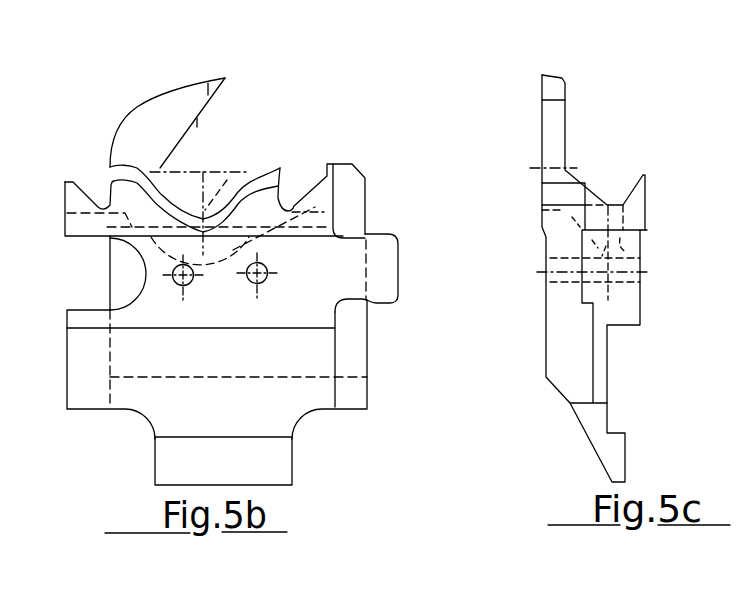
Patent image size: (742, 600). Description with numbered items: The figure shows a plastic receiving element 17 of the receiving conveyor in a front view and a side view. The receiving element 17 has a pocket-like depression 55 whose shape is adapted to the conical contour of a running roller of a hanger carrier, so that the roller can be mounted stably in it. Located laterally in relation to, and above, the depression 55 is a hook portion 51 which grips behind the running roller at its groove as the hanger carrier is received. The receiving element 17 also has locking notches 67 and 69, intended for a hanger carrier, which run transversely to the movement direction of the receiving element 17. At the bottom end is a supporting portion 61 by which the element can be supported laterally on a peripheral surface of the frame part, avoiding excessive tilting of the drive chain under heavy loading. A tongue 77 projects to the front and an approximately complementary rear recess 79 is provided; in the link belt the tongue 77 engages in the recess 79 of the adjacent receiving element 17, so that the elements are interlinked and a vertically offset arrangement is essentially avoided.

In FIG. 5B, the receiving element 17 is at (380, 413).
In FIG. 5C, the receiving element 17 is at (648, 383).
In FIG. 5B, the hook portion 51 is at (165, 118).
In FIG. 5B, the pocket-like depression 55 is at (227, 180).
In FIG. 5C, the pocket-like depression 55 is at (647, 262).
In FIG. 5B, the supporting portion 61 is at (278, 470).
In FIG. 5B, the locking notch 67 is at (288, 198).
In FIG. 5B, the locking notch 69 is at (98, 200).
In FIG. 5B, the tongue 77 is at (382, 277).
In FIG. 5B, the rear recess 79 is at (97, 282).